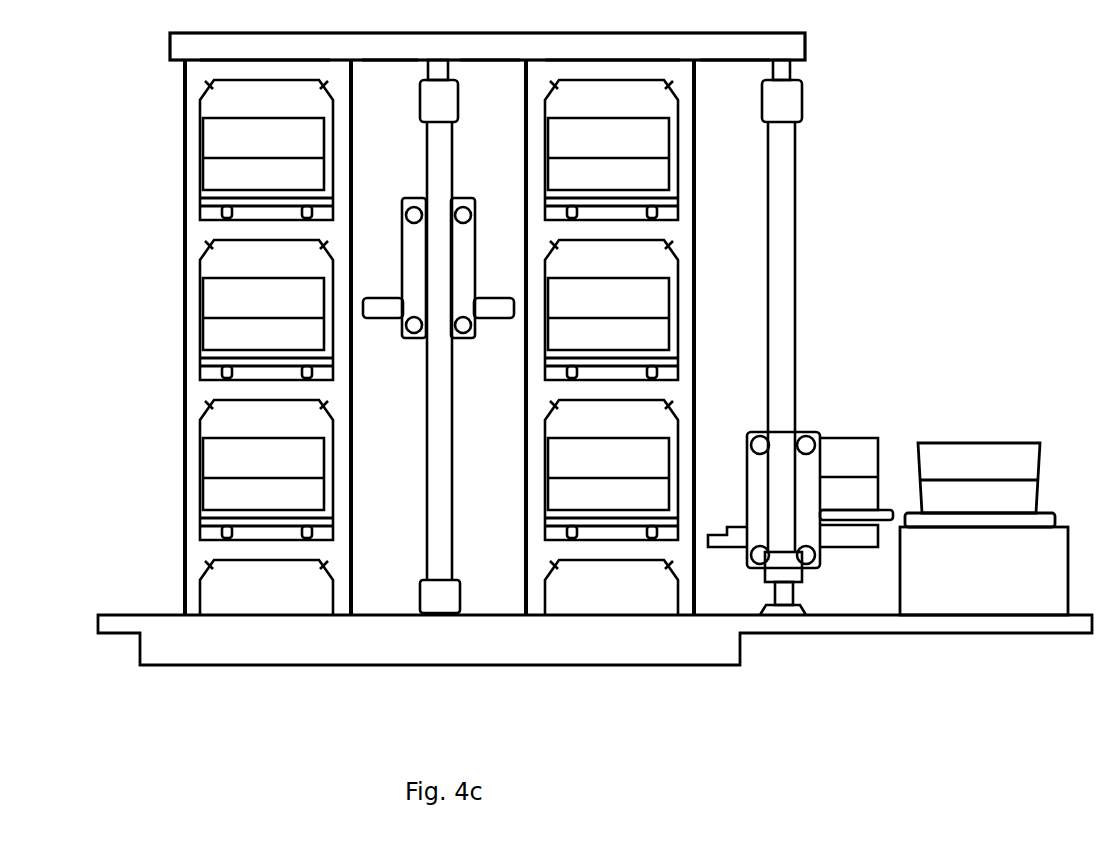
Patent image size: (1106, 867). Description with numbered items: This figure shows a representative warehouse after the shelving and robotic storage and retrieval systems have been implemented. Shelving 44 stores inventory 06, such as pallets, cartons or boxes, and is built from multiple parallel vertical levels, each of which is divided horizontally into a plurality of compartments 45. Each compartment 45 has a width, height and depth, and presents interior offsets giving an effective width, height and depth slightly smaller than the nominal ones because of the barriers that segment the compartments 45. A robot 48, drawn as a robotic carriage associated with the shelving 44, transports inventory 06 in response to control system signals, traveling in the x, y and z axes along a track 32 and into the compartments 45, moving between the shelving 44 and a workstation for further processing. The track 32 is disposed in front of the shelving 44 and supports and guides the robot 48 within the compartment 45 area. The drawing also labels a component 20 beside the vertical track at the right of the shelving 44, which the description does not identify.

The shelving 44 is at (176, 65).
The compartment 45 is at (432, 347).
The inventory 06 is at (557, 457).
The track 32 is at (452, 137).
The robot 48 is at (405, 200).
The carriage 20 is at (747, 435).